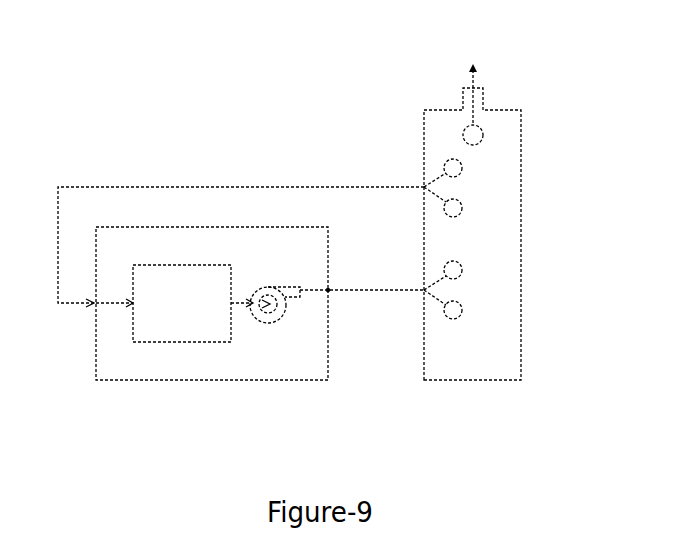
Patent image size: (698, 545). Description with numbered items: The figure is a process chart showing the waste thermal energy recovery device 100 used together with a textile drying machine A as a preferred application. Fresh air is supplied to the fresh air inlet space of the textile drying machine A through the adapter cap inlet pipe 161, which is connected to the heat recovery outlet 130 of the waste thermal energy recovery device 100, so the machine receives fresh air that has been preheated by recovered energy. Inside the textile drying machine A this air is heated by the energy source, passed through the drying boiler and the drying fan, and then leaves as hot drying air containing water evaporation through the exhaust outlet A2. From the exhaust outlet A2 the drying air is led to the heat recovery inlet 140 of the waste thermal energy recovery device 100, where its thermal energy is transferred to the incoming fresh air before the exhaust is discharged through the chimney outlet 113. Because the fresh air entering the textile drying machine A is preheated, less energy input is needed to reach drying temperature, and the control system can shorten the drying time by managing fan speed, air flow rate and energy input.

The waste thermal energy recovery device 100 is at (513, 288).
The chimney outlet 113 is at (470, 93).
The heat recovery outlet 130 is at (424, 187).
The heat recovery inlet 140 is at (424, 290).
The adapter cap inlet pipe 161 is at (85, 303).
The textile drying machine A is at (200, 363).
The exhaust outlet A2 is at (328, 290).